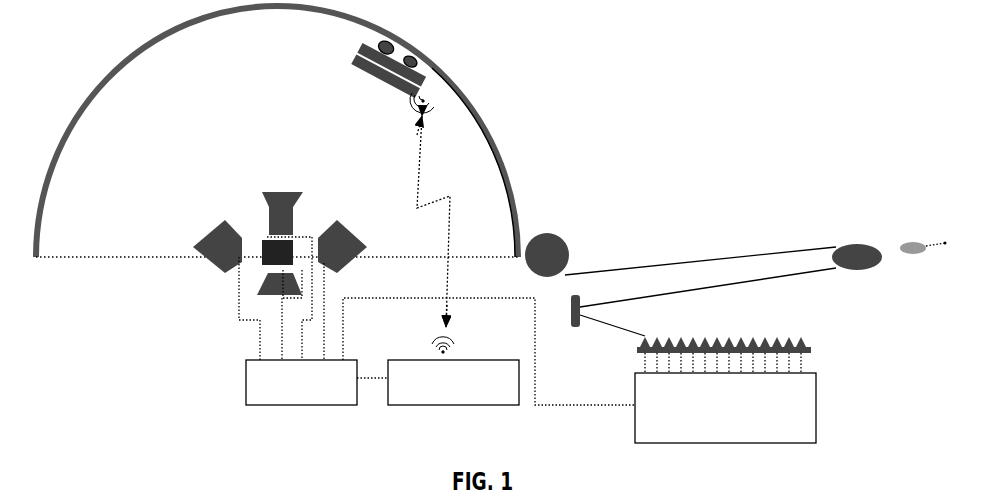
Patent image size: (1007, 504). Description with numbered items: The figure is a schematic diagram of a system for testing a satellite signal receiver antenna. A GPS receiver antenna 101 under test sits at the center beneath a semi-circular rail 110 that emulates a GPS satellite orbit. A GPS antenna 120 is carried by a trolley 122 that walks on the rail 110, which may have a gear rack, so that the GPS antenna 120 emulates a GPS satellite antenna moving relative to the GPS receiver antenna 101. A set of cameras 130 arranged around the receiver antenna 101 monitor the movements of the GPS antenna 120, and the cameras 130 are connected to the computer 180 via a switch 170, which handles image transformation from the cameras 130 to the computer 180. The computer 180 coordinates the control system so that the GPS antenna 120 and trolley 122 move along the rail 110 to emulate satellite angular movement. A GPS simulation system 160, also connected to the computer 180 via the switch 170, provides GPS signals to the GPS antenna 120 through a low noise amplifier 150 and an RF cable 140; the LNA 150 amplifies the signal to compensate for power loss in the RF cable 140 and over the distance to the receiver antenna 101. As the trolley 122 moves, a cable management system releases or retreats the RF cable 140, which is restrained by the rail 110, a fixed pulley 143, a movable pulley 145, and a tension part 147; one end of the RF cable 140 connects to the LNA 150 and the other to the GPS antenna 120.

The GPS receiver antenna 101 is at (262, 239).
The rail 110 is at (42, 222).
The GPS antenna 120 is at (375, 73).
The trolley 122 is at (356, 50).
The camera 130 is at (330, 229).
The RF cable 140 is at (705, 250).
The fixed pulley 143 is at (554, 232).
The movable pulley 145 is at (846, 246).
The tension part 147 is at (908, 240).
The low noise amplifier 150 is at (809, 340).
The GPS simulation system 160 is at (818, 393).
The switch 170 is at (245, 380).
The computer 180 is at (443, 407).